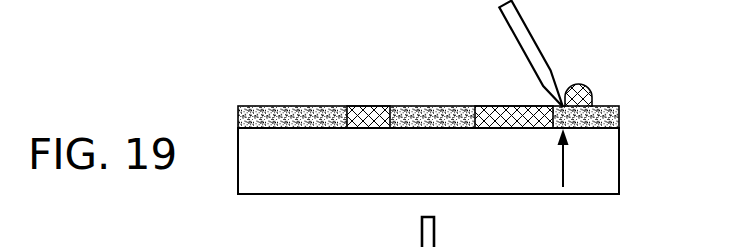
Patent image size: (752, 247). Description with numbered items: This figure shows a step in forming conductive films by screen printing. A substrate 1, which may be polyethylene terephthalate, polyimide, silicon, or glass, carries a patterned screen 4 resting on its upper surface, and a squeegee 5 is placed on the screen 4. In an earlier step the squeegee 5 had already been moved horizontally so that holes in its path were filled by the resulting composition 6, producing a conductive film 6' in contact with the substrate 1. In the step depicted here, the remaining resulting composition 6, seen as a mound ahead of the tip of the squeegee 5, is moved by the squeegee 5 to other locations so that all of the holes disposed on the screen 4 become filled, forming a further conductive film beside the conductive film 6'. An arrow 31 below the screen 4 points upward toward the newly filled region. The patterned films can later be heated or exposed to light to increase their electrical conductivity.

The substrate 1 is at (608, 170).
The patterned screen 4 is at (612, 118).
The squeegee 5 is at (499, 14).
The resulting composition 6 is at (601, 86).
The conductive film 6' is at (368, 86).
The irradiation direction arrow 31 is at (561, 165).